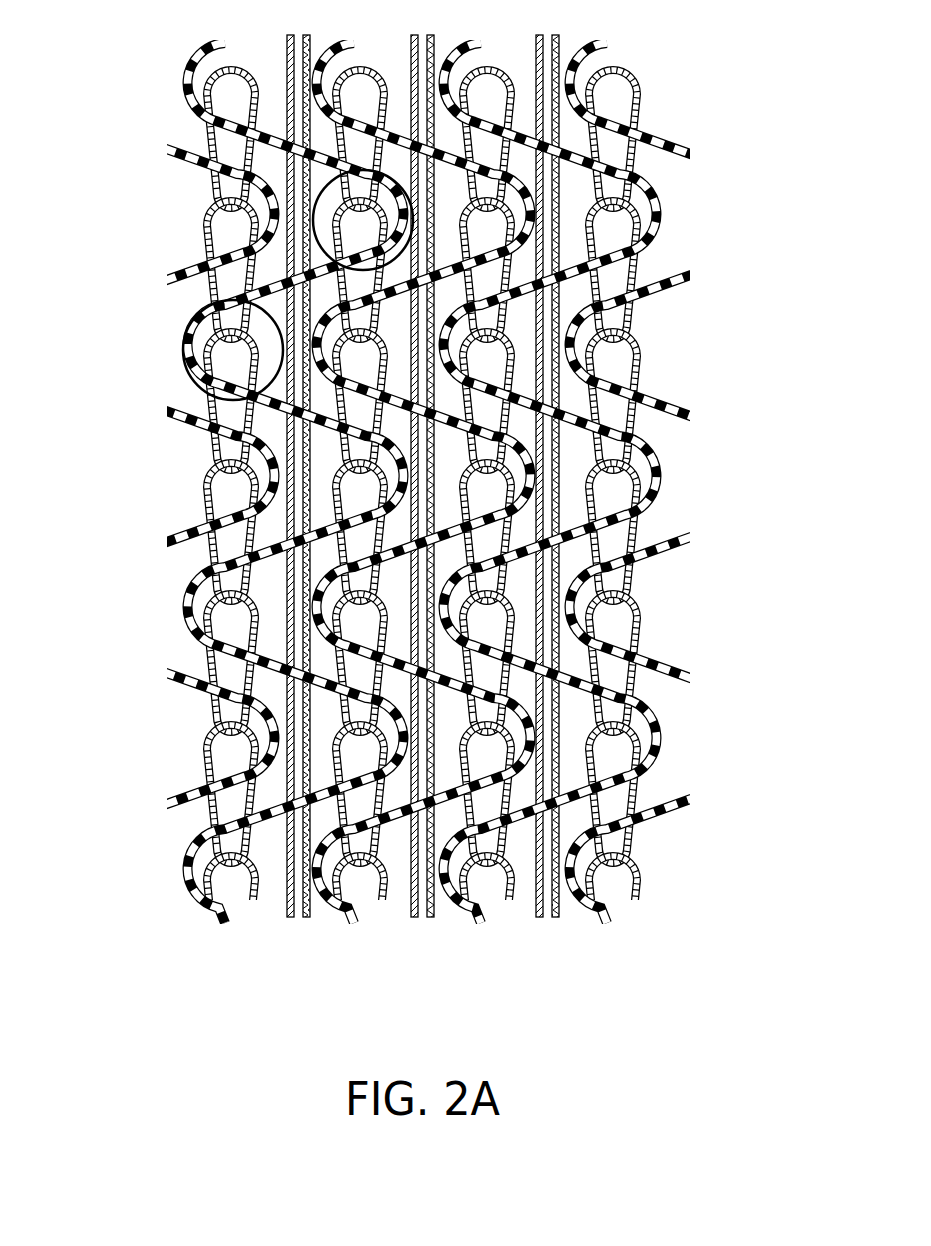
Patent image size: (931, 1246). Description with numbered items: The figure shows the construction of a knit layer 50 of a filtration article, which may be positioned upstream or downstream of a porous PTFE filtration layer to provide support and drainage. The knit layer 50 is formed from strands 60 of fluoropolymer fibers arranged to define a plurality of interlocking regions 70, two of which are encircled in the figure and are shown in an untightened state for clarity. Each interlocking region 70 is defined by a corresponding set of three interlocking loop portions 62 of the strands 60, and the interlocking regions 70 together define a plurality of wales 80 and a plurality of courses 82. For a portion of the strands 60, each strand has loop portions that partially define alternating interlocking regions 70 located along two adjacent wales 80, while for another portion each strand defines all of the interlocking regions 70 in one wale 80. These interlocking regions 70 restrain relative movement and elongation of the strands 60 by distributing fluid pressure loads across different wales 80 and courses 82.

The knit layer 50 is at (432, 516).
The strands 60 is at (110, 160).
The interlocking loop portions 62 is at (170, 497).
The interlocking regions 70 is at (322, 258).
The wales 80 is at (610, 932).
The courses 82 is at (672, 222).